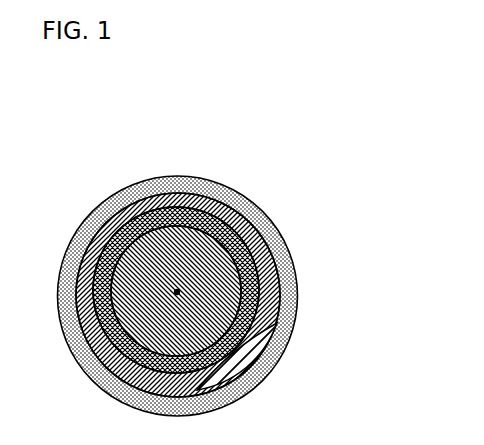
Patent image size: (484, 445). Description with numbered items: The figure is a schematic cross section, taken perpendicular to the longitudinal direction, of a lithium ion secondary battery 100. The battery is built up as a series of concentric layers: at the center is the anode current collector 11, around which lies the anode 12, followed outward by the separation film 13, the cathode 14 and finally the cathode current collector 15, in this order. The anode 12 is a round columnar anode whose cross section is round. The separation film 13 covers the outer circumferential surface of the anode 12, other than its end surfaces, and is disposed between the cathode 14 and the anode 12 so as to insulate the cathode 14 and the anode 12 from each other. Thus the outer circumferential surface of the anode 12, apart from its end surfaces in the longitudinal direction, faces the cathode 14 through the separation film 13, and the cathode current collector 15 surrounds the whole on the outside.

The lithium ion secondary battery 100 is at (134, 114).
The anode current collector 11 is at (177, 292).
The anode 12 is at (217, 267).
The separation film 13 is at (232, 207).
The cathode 14 is at (272, 327).
The cathode current collector 15 is at (187, 181).